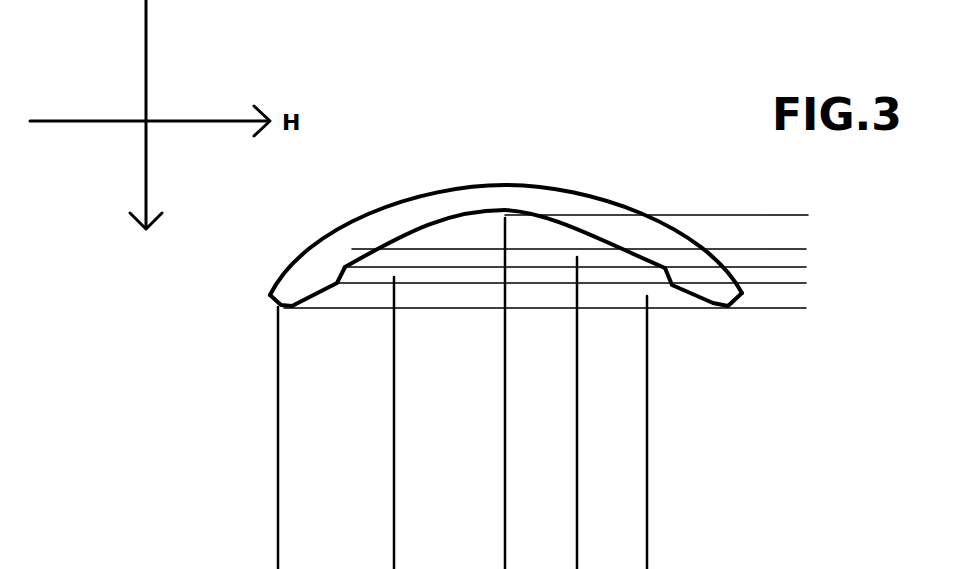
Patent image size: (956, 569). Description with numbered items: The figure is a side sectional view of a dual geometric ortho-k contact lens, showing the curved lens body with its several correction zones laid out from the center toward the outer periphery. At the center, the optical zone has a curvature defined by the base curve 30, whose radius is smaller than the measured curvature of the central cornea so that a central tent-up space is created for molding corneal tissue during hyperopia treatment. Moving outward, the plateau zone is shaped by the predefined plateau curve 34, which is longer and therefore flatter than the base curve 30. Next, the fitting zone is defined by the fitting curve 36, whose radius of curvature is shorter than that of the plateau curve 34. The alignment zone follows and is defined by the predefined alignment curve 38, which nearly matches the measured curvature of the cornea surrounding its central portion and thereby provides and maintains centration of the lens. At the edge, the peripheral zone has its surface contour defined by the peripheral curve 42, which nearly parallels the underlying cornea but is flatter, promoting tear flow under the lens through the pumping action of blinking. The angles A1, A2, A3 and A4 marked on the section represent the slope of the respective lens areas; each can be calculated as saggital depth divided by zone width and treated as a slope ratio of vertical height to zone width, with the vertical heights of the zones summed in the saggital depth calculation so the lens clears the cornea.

The base curve 30 is at (772, 235).
The plateau curve 34 is at (772, 259).
The fitting curve 36 is at (772, 275).
The alignment curve 38 is at (772, 300).
The peripheral curve 42 is at (273, 302).
The angle A1 is at (601, 229).
The angle A2 is at (652, 256).
The angle A3 is at (358, 252).
The angle A4 is at (711, 291).